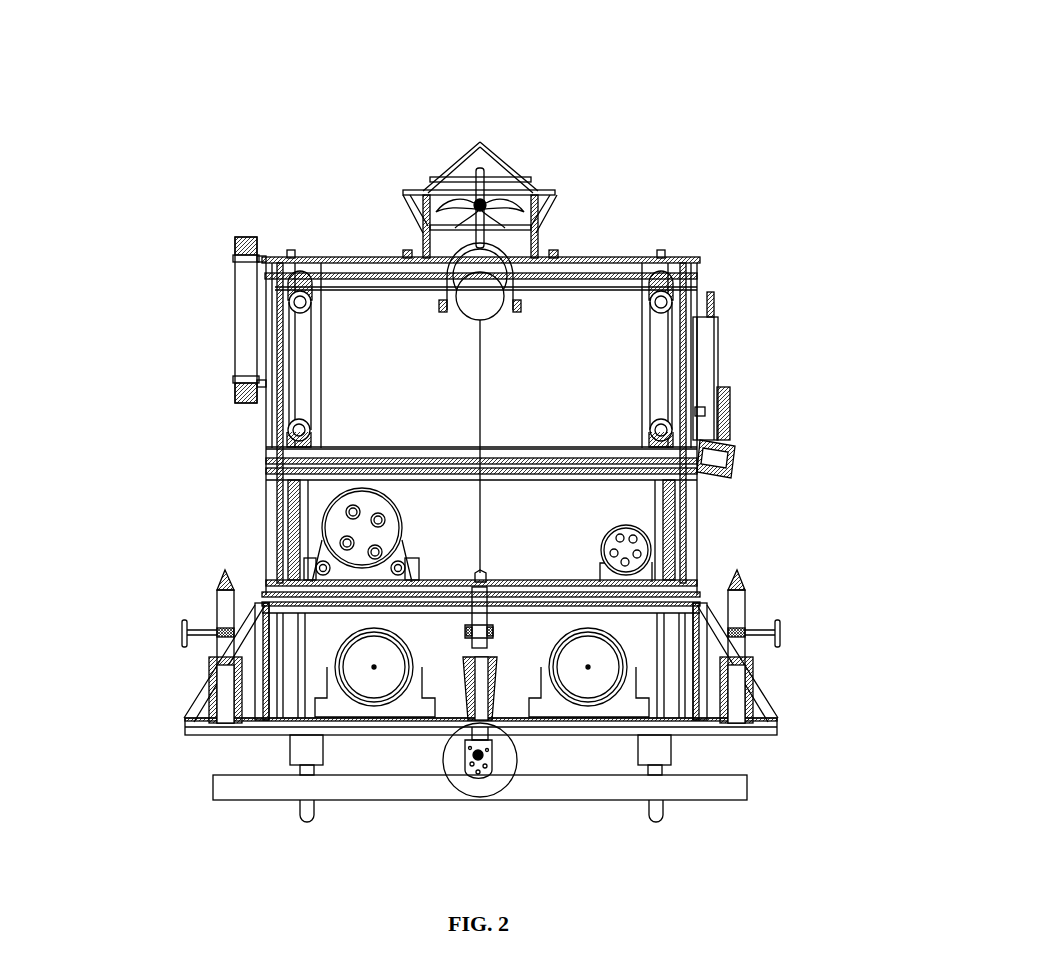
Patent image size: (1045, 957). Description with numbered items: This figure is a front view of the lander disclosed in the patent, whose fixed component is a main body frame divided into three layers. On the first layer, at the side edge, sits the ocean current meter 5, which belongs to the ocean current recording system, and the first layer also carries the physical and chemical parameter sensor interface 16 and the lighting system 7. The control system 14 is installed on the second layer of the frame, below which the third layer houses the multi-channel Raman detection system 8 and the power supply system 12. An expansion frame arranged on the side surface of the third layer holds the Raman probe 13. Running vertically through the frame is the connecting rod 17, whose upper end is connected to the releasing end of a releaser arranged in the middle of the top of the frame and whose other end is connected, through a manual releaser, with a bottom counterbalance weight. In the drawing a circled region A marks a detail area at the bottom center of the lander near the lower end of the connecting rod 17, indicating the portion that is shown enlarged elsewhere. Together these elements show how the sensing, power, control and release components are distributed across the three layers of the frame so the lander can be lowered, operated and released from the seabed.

The ocean current meter 5 is at (248, 310).
The lighting system 7 is at (295, 262).
The multi-channel Raman detection system 8 is at (374, 660).
The power supply system 12 is at (590, 660).
The Raman probe 13 is at (738, 597).
The control system 14 is at (362, 528).
The physical and chemical parameter sensor interface 16 is at (730, 425).
The connecting rod 17 is at (480, 385).
The detail region A is at (512, 790).